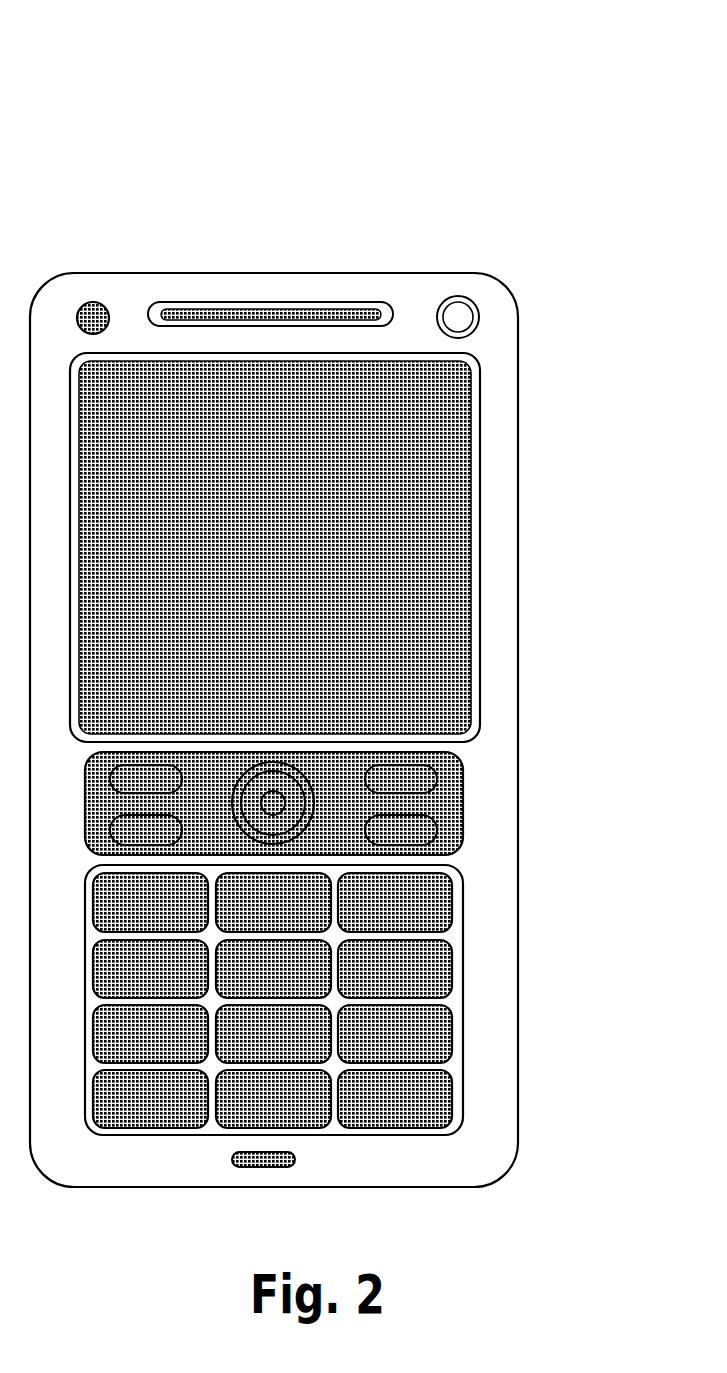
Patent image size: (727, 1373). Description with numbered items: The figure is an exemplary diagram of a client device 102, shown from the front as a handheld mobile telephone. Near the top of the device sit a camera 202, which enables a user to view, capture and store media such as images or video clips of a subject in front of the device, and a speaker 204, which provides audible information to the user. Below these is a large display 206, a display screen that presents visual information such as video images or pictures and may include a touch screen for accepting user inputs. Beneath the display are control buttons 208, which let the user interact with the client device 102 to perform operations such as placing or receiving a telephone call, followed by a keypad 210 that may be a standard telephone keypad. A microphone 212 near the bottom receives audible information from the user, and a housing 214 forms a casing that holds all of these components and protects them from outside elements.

The client device 102 is at (288, 145).
The camera 202 is at (93, 302).
The speaker 204 is at (250, 312).
The display 206 is at (415, 353).
The control buttons 208 is at (463, 803).
The keypad 210 is at (463, 1000).
The microphone 212 is at (295, 1159).
The housing 214 is at (440, 1188).